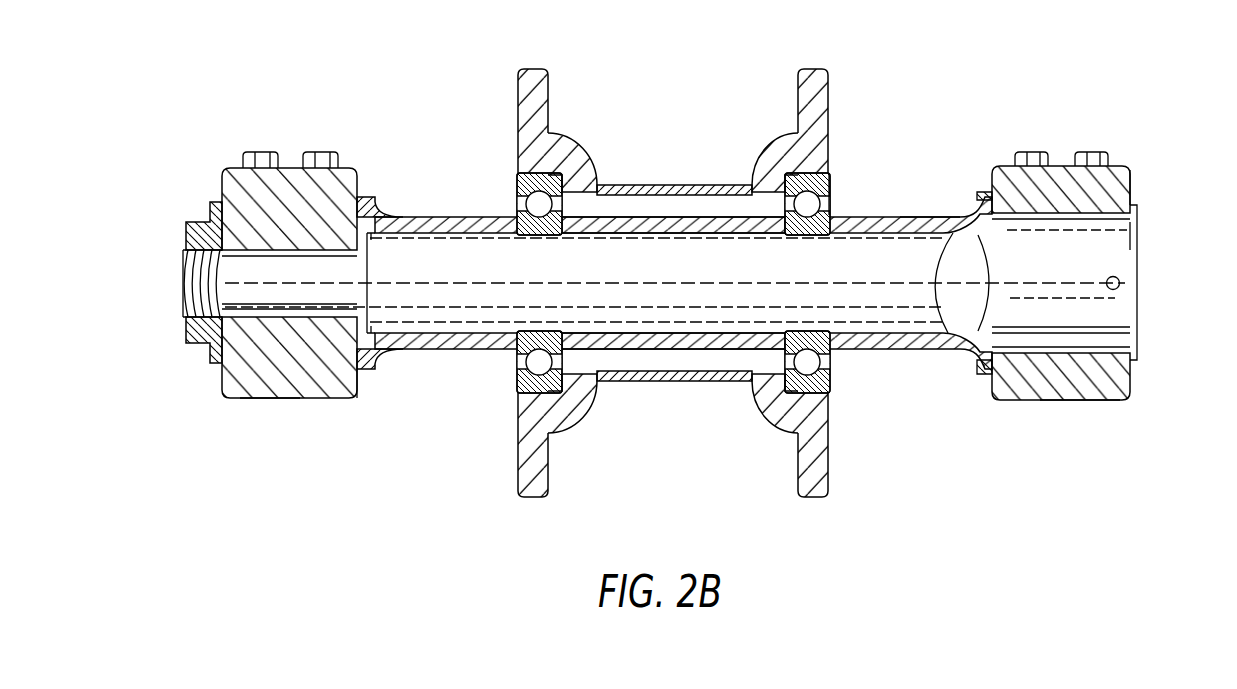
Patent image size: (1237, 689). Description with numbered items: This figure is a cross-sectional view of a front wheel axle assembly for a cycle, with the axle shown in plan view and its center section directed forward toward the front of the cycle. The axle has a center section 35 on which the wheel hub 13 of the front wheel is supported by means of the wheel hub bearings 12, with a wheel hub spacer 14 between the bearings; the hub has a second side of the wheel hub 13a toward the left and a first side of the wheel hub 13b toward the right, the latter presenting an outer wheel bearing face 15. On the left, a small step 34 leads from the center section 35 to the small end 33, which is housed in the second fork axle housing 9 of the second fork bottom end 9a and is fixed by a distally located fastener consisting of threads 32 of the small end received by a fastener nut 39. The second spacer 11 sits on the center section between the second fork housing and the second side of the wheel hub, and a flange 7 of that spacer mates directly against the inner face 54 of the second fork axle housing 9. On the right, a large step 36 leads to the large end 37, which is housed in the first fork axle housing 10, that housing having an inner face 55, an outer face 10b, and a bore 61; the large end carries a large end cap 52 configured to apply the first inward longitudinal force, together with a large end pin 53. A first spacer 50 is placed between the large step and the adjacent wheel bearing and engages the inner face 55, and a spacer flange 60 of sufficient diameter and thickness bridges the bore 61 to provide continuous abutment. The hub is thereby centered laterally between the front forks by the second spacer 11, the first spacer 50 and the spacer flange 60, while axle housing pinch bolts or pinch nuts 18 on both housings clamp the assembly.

The flange of the second spacer 7 is at (367, 193).
The second fork axle housing 9 is at (286, 284).
The second fork bottom end 9a is at (260, 355).
The first fork axle housing 10 is at (1108, 290).
The outer face of the first fork axle housing 10b is at (1135, 203).
The second spacer 11 is at (675, 290).
The wheel hub bearings 12 is at (543, 177).
The wheel hub 13 is at (627, 185).
The second side of the wheel hub 13a is at (515, 217).
The first side of the wheel hub 13b is at (850, 214).
The wheel hub spacer 14 is at (667, 222).
The outer wheel bearing face 15 is at (833, 213).
The axle housing pinch bolts or pinch nuts 18 is at (322, 152).
The threads of the small end 32 is at (185, 280).
The small end 33 is at (307, 303).
The small step 34 is at (370, 245).
The center section 35 is at (438, 250).
The large step 36 is at (970, 333).
The large end 37 is at (1128, 235).
The fastener nut 39 is at (209, 222).
The first spacer 50 is at (923, 217).
The large end cap 52 is at (1137, 215).
The large end pin 53 is at (1120, 283).
The inner face of the second fork axle housing 54 is at (358, 382).
The inner face of the first fork axle housing 55 is at (977, 190).
The spacer flange 60 is at (980, 374).
The bore of the first fork axle housing 61 is at (1093, 398).